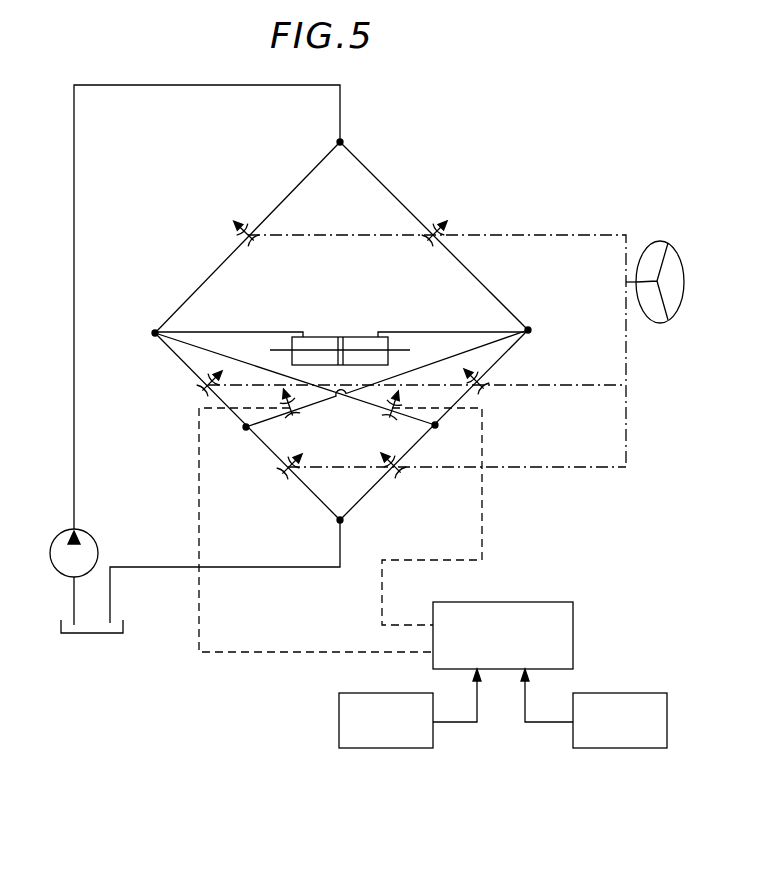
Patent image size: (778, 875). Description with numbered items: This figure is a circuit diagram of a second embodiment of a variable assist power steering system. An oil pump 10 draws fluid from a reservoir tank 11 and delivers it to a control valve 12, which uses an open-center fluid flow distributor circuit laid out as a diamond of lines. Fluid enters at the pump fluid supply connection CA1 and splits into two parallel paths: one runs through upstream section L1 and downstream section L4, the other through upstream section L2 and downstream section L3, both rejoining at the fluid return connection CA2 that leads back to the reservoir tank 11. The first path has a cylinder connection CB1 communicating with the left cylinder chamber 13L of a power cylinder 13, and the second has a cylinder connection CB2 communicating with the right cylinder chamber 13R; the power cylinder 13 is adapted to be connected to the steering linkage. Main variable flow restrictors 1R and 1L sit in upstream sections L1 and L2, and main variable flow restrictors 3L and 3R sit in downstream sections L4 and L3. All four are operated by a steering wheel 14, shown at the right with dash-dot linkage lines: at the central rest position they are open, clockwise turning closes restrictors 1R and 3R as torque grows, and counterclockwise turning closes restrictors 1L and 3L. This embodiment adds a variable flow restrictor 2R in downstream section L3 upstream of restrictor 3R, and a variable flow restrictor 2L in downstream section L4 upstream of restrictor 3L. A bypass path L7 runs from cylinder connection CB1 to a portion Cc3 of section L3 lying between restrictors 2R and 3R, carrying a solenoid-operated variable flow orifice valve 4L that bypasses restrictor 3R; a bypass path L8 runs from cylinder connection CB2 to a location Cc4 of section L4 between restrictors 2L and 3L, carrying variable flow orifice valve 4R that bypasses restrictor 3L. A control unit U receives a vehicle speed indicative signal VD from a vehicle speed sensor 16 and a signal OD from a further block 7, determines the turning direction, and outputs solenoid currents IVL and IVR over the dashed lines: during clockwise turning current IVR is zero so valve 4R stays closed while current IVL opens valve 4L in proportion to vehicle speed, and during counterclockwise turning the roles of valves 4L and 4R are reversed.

The control valve 12 is at (290, 193).
The oil pump 10 is at (90, 534).
The reservoir tank 11 is at (130, 625).
The power cylinder 13 is at (337, 341).
The left cylinder chamber 13L is at (312, 342).
The right cylinder chamber 13R is at (362, 342).
The steering wheel 14 is at (664, 322).
The vehicle speed sensor 16 is at (352, 693).
The operation detector 7 is at (628, 694).
The control unit U is at (574, 610).
The main variable flow restrictor 1R is at (242, 220).
The main variable flow restrictor 1L is at (439, 221).
The additional variable flow restrictor 2L is at (198, 389).
The additional variable flow restrictor 2R is at (487, 385).
The main variable flow restrictor 3L is at (285, 480).
The main variable flow restrictor 3R is at (397, 478).
The variable flow orifice valve 4L is at (385, 420).
The variable flow orifice valve 4R is at (302, 416).
The upstream section L1 is at (326, 157).
The upstream section L2 is at (368, 163).
The downstream section L3 is at (516, 345).
The downstream section L4 is at (176, 355).
The bypass path L7 is at (222, 357).
The bypass path L8 is at (456, 348).
The pump fluid supply connection CA1 is at (344, 140).
The fluid return connection CA2 is at (344, 522).
The cylinder connection CB1 is at (155, 330).
The cylinder connection CB2 is at (530, 328).
The portion of downstream section L3 Cc3 is at (437, 428).
The location of downstream section L4 Cc4 is at (246, 432).
The solenoid current IVL is at (398, 615).
The solenoid current IVR is at (397, 665).
The vehicle speed indicative signal VD is at (457, 697).
The operation signal OD is at (547, 697).